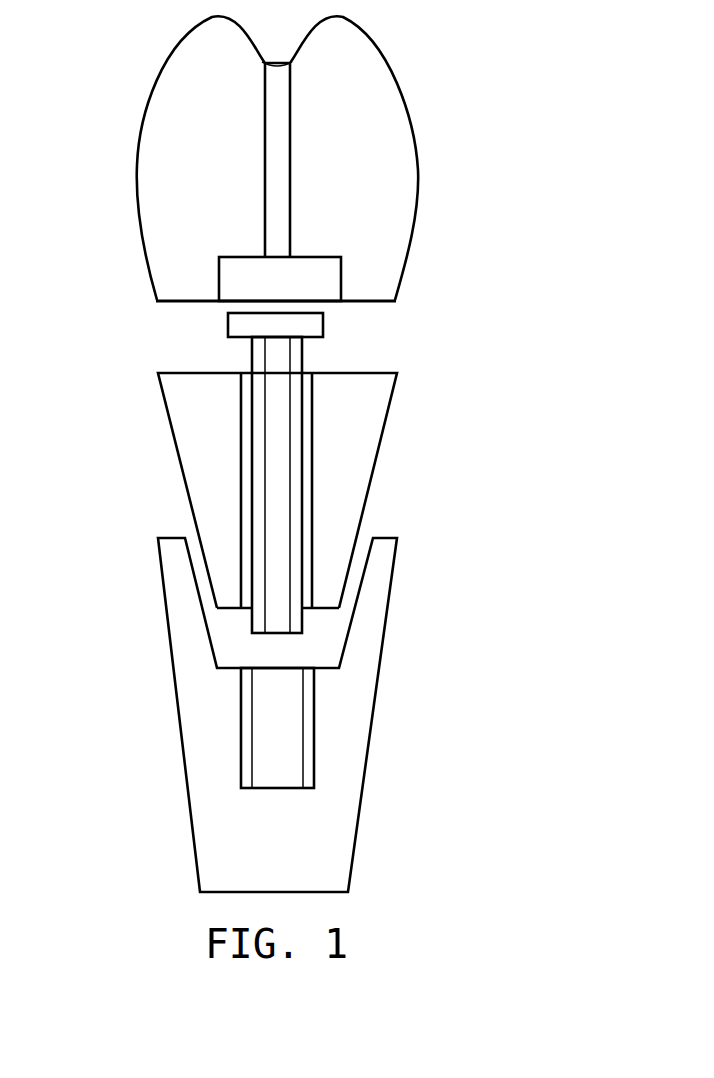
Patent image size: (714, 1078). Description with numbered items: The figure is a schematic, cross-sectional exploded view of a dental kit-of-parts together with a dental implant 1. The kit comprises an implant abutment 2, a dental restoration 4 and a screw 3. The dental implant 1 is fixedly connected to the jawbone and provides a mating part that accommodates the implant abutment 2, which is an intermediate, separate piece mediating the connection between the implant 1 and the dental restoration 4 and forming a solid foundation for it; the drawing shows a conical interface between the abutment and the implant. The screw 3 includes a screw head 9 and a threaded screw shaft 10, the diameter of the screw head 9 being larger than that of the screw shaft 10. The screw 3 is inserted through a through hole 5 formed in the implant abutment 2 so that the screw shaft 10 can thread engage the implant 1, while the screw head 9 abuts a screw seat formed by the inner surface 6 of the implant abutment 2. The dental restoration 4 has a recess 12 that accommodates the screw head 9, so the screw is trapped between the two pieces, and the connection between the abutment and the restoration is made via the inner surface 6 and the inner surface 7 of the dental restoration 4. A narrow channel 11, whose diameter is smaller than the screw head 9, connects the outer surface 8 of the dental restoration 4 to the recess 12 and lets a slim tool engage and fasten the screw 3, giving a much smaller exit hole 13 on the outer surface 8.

The dental implant 1 is at (450, 762).
The implant abutment 2 is at (450, 480).
The screw 3 is at (360, 327).
The dental restoration 4 is at (450, 180).
The through hole 5 is at (240, 520).
The inner surface of the implant abutment 6 is at (198, 373).
The inner surface of the dental restoration 7 is at (232, 277).
The outer surface of the dental restoration 8 is at (162, 123).
The screw head 9 is at (243, 323).
The screw shaft 10 is at (275, 419).
The channel 11 is at (275, 167).
The recess 12 is at (278, 277).
The exit hole 13 is at (268, 66).